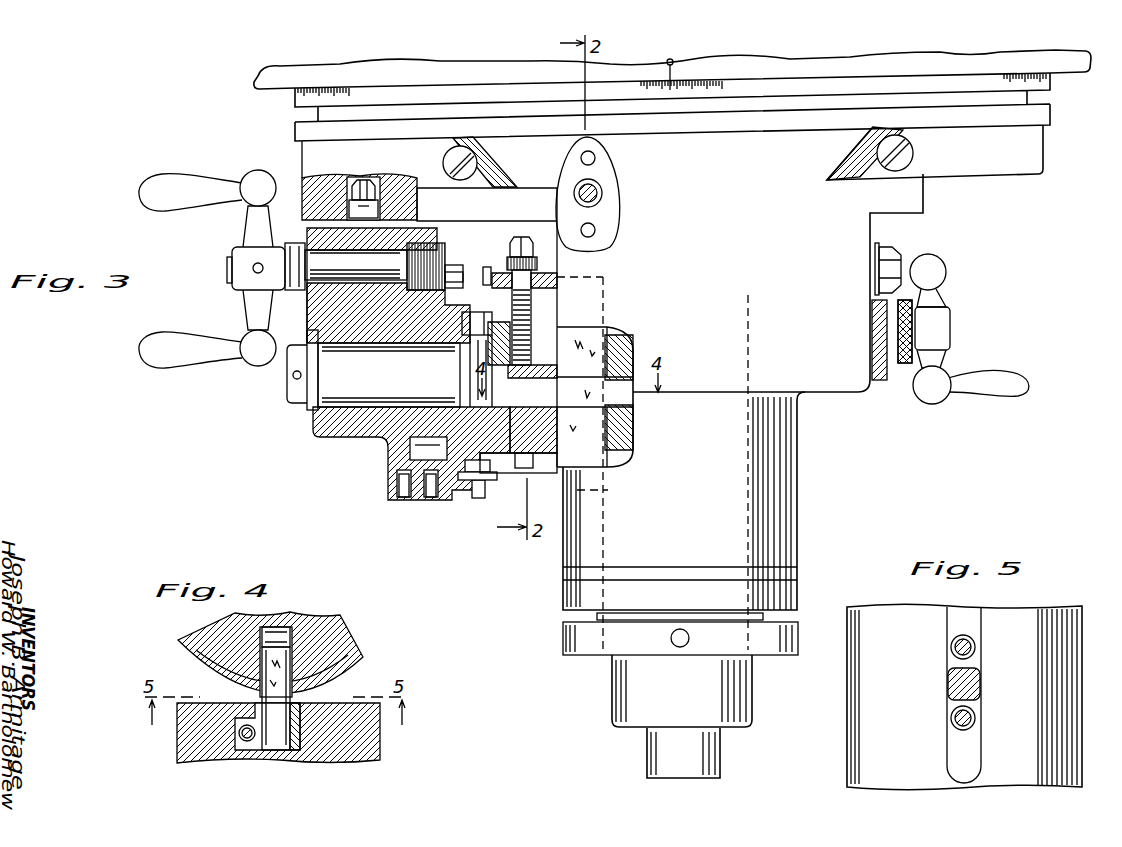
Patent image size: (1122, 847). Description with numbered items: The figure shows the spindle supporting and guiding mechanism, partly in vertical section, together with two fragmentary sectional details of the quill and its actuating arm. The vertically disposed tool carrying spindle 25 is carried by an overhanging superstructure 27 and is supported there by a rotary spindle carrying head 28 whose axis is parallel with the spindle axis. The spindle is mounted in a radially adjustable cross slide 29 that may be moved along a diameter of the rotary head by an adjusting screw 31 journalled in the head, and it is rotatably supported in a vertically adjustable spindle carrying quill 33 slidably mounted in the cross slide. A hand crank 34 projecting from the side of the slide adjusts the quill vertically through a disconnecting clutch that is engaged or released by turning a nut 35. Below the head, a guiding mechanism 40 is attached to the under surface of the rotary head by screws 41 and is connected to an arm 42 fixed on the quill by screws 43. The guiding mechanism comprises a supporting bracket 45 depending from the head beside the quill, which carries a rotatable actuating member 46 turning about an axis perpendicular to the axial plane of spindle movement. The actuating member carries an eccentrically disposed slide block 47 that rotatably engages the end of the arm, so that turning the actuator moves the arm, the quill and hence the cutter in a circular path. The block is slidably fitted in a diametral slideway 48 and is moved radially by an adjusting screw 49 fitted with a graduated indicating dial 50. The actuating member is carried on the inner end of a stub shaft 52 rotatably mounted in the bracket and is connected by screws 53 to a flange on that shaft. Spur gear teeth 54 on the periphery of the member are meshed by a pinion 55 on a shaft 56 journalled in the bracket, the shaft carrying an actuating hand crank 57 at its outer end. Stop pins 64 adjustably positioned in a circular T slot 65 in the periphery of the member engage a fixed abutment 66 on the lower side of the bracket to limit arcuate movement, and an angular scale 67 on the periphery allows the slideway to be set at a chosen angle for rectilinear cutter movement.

In FIG. 3, the tool carrying spindle 25 is at (668, 762).
In FIG. 3, the overhanging superstructure 27 is at (983, 58).
In FIG. 3, the rotary spindle carrying head 28 is at (1028, 152).
In FIG. 3, the cross slide 29 is at (908, 207).
In FIG. 4, the cross slide 29 is at (350, 650).
In FIG. 5, the cross slide 29 is at (934, 600).
In FIG. 3, the adjusting screw 31 is at (575, 185).
In FIG. 3, the spindle carrying quill 33 is at (636, 701).
In FIG. 4, the spindle carrying quill 33 is at (313, 625).
In FIG. 5, the spindle carrying quill 33 is at (965, 622).
In FIG. 3, the hand crank 34 is at (1008, 385).
In FIG. 3, the nut 35 is at (889, 245).
In FIG. 3, the guiding mechanism 40 is at (333, 461).
In FIG. 4, the guiding mechanism 40 is at (165, 772).
In FIG. 3, the screws 41 is at (367, 179).
In FIG. 3, the arm 42 is at (600, 397).
In FIG. 4, the arm 42 is at (275, 733).
In FIG. 5, the arm 42 is at (953, 688).
In FIG. 3, the screws 43 is at (630, 352).
In FIG. 4, the screws 43 is at (247, 740).
In FIG. 5, the screws 43 is at (978, 652).
In FIG. 3, the supporting bracket 45 is at (306, 203).
In FIG. 3, the rotatable actuating member 46 is at (507, 470).
In FIG. 4, the rotatable actuating member 46 is at (374, 750).
In FIG. 3, the slide block 47 is at (547, 438).
In FIG. 4, the slide block 47 is at (300, 737).
In FIG. 3, the slot or slideway 48 is at (537, 300).
In FIG. 3, the adjusting screw 49 is at (527, 320).
In FIG. 3, the indicating dial 50 is at (538, 265).
In FIG. 3, the stub shaft 52 is at (333, 370).
In FIG. 3, the screws 53 is at (487, 330).
In FIG. 3, the spur gear teeth 54 is at (403, 470).
In FIG. 3, the pinion 55 is at (415, 260).
In FIG. 3, the shaft 56 is at (320, 265).
In FIG. 3, the actuating hand crank 57 is at (178, 188).
In FIG. 3, the stop pins 64 is at (477, 492).
In FIG. 3, the circular T slot 65 is at (486, 267).
In FIG. 3, the fixed abutment 66 is at (445, 495).
In FIG. 3, the angular scale 67 is at (452, 265).